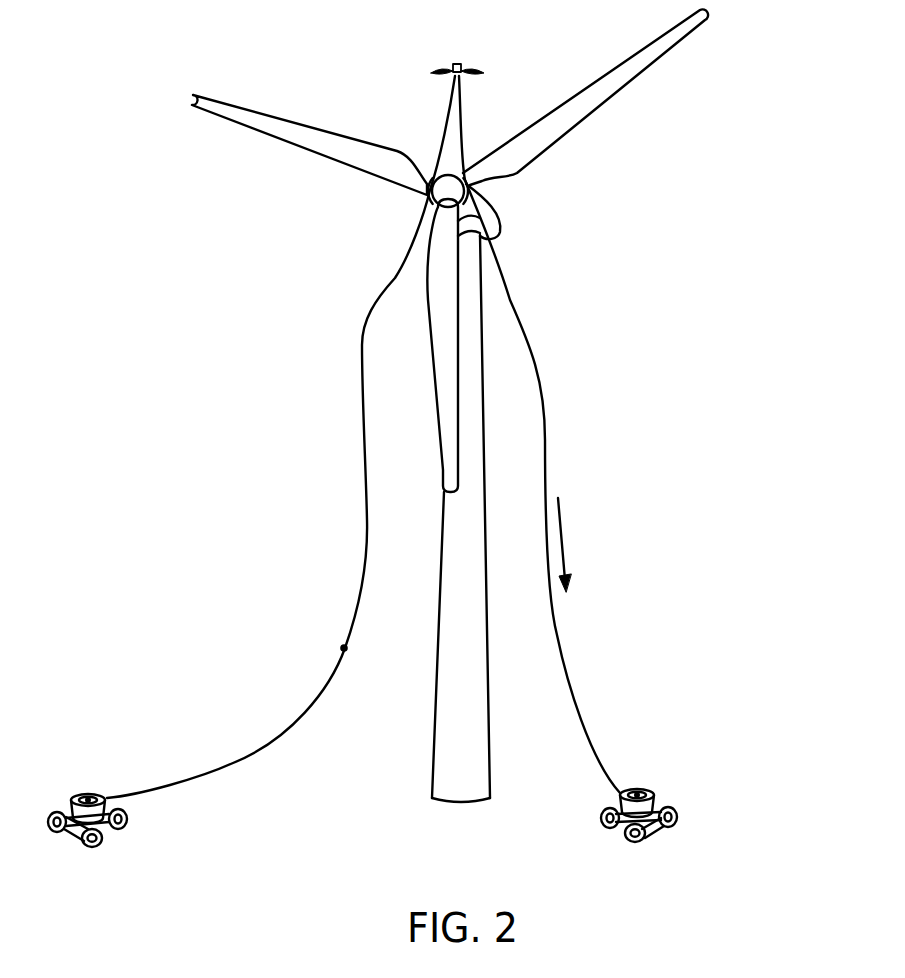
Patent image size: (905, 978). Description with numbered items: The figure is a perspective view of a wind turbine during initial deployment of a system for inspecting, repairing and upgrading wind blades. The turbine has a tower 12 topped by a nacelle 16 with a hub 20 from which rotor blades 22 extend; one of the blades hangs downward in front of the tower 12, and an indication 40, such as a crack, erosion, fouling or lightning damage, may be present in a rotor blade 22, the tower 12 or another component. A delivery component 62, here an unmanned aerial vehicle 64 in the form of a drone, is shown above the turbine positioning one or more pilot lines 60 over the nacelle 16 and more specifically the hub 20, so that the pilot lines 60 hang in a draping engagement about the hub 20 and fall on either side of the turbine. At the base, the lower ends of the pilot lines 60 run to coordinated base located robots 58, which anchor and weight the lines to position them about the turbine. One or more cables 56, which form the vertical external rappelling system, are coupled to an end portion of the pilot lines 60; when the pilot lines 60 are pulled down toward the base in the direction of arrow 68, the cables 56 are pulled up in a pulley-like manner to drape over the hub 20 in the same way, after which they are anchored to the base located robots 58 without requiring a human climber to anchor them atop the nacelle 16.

The tower 12 is at (490, 762).
The nacelle 16 is at (502, 230).
The hub 20 is at (445, 207).
The rotor blade 22 is at (277, 113).
The indication 40 is at (458, 392).
The cable 56 is at (243, 764).
The coordinated base located robot 58 is at (125, 818).
The pilot line 60 is at (558, 447).
The delivery component 62 is at (433, 64).
The unmanned aerial vehicle 64 is at (478, 63).
The arrow 68 is at (568, 518).